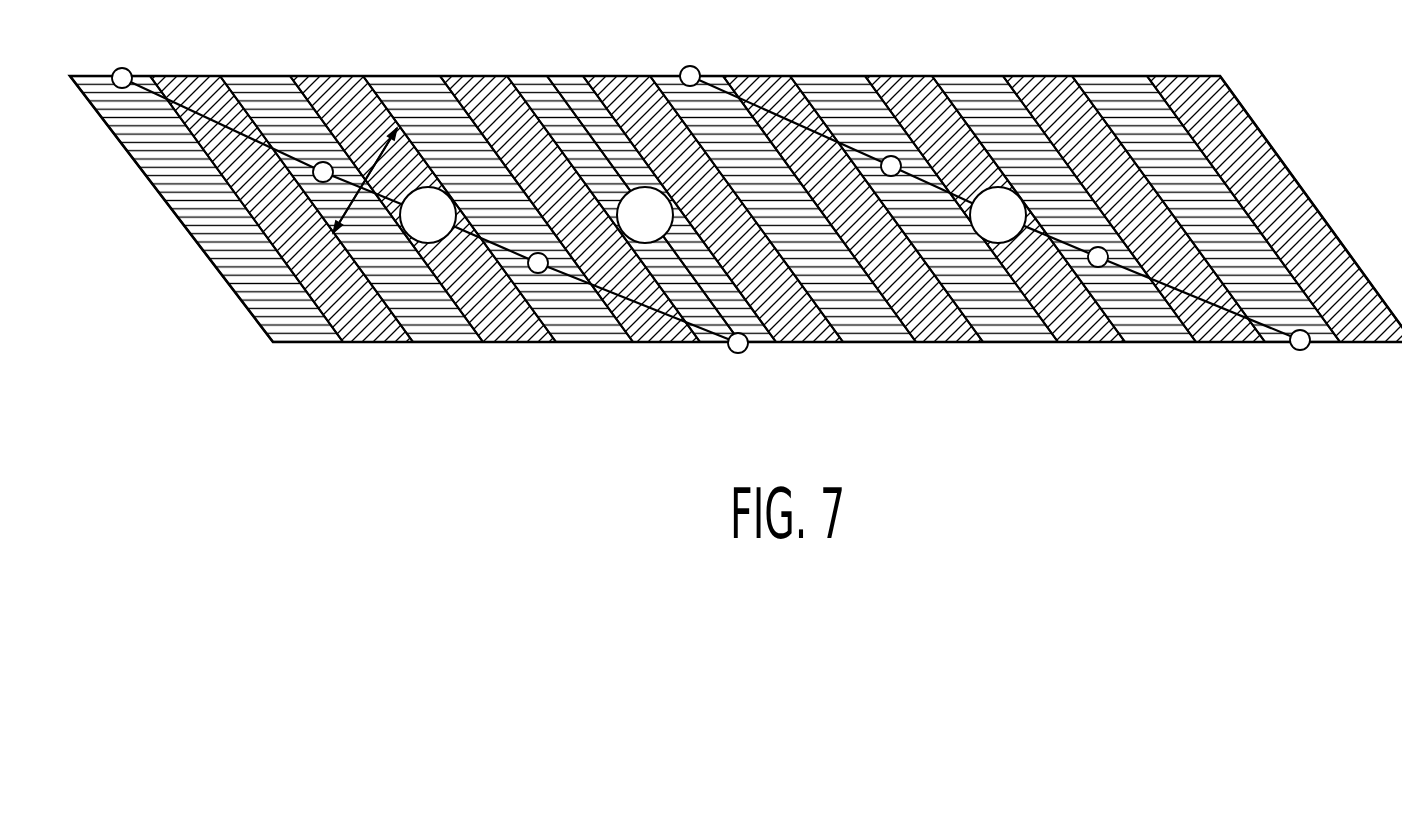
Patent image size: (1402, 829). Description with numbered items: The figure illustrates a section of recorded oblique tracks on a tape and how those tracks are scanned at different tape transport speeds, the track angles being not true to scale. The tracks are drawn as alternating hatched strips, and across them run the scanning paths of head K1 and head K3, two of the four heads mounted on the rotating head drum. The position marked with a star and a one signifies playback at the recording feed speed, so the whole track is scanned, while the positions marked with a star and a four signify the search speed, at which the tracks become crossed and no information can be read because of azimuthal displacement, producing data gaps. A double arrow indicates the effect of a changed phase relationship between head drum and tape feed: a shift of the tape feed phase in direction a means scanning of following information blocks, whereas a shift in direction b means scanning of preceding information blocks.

The head 1 K1 is at (752, 386).
The head 3 K3 is at (1292, 386).
The direction a is at (377, 164).
The direction b is at (357, 202).